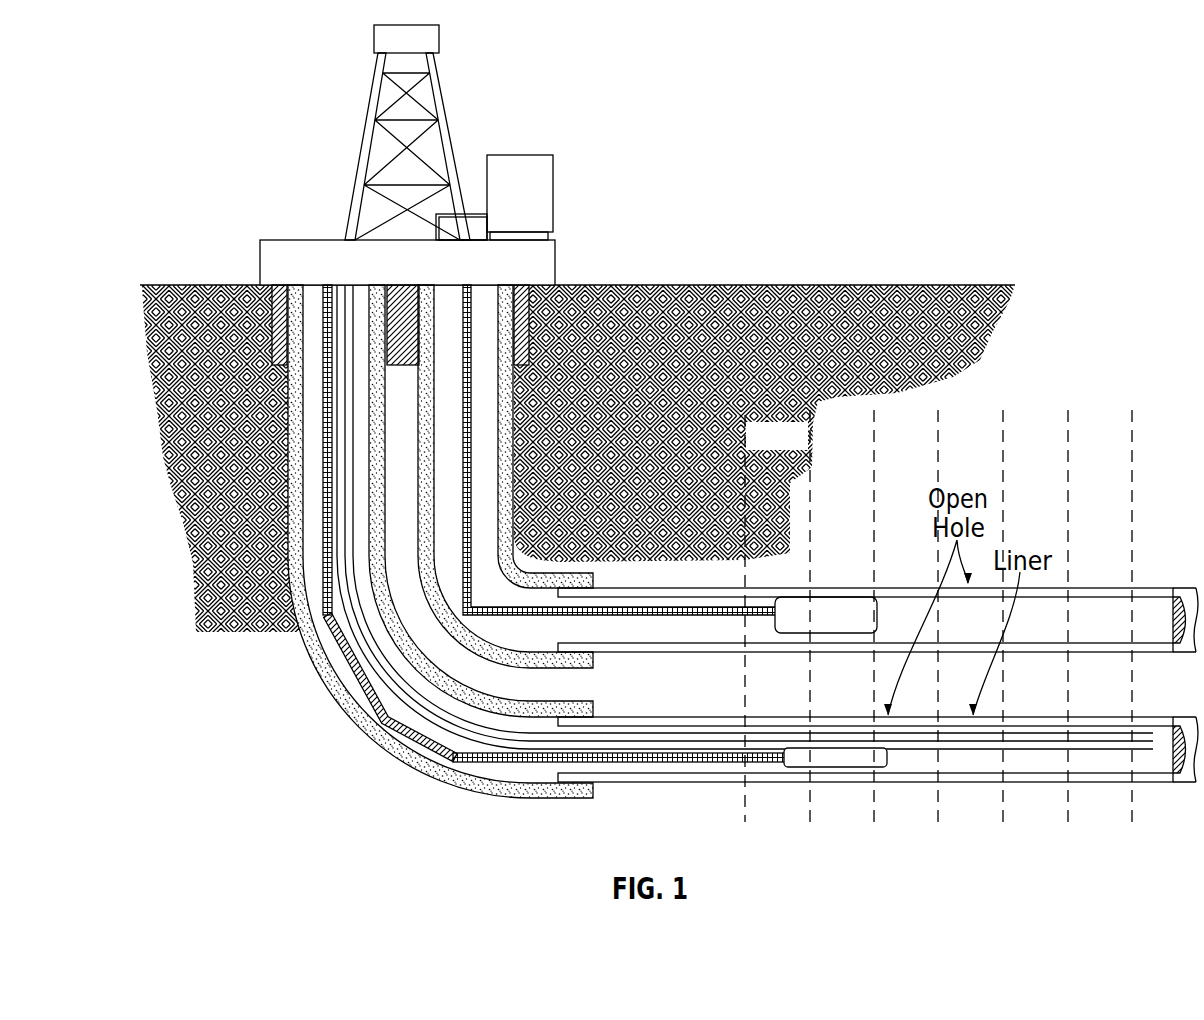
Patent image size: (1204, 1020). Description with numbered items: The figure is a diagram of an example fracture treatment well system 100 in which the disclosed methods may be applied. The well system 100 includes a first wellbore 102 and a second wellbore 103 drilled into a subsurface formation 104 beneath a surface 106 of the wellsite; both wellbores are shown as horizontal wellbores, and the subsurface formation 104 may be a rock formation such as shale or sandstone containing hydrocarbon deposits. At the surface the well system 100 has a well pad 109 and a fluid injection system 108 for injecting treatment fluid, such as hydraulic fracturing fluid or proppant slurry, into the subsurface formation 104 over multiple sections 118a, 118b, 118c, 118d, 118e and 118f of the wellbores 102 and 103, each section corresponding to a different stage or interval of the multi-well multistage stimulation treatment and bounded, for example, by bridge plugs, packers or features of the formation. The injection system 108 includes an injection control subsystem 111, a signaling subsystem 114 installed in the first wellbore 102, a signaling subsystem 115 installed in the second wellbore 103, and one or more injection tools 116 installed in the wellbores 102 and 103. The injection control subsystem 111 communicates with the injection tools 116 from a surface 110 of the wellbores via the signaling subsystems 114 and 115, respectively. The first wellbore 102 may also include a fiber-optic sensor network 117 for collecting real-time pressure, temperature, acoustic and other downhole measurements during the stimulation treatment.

The fracture treatment well system 100 is at (302, 768).
The first wellbore 102 is at (960, 784).
The second wellbore 103 is at (1082, 587).
The subsurface formation 104 is at (978, 378).
The surface 106 is at (805, 286).
The fluid injection system 108 is at (375, 155).
The well pad 109 is at (430, 276).
The surface 110 is at (380, 229).
The injection control subsystem 111 is at (540, 155).
The signaling subsystem 114 is at (335, 444).
The signaling subsystem 115 is at (472, 381).
The injection tool 116 is at (848, 628).
The fiber-optic sensor network 117 is at (383, 688).
The section 118a is at (776, 618).
The section 118b is at (840, 616).
The section 118c is at (904, 616).
The section 118d is at (968, 616).
The section 118e is at (1033, 616).
The section 118f is at (1100, 616).